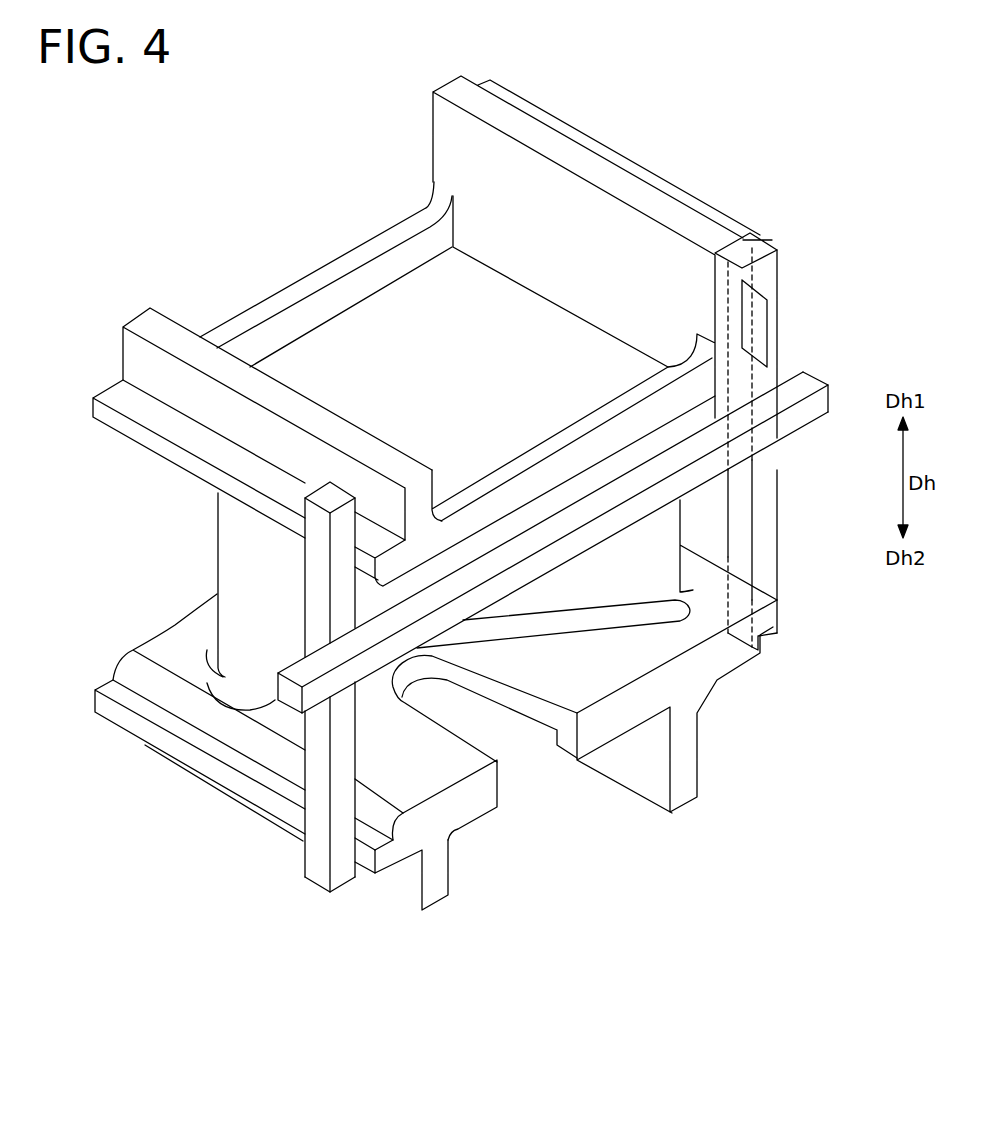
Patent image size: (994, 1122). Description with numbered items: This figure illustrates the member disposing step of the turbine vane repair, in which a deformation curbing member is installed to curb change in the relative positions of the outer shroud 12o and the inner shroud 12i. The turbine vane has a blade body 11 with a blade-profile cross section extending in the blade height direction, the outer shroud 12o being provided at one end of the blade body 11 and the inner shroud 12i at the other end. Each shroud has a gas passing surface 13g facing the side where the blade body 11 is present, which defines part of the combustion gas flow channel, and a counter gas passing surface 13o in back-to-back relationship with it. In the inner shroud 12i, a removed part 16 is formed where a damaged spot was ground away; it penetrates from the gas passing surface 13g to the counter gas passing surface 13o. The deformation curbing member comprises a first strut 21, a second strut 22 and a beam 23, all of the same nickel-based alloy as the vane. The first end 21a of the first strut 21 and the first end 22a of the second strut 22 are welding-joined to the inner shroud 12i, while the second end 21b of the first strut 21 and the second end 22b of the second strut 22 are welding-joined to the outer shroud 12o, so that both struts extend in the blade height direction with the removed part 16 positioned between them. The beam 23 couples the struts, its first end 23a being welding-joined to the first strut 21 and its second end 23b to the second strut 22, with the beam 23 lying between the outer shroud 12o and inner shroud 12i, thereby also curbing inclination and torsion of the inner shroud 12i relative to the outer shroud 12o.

The blade body 11 is at (240, 566).
The outer shroud 12o is at (117, 423).
The inner shroud 12i is at (117, 714).
The counter gas passing surface 13o is at (475, 820).
The gas passing surface 13g is at (437, 763).
The removed part 16 is at (540, 707).
The first strut 21 is at (315, 752).
The first end of first strut 21a is at (347, 873).
The second end of first strut 21b is at (342, 527).
The second strut 22 is at (780, 498).
The first end of second strut 22a is at (778, 628).
The second end of second strut 22b is at (778, 285).
The beam 23 is at (647, 500).
The first end of beam 23a is at (303, 673).
The second end of beam 23b is at (790, 385).